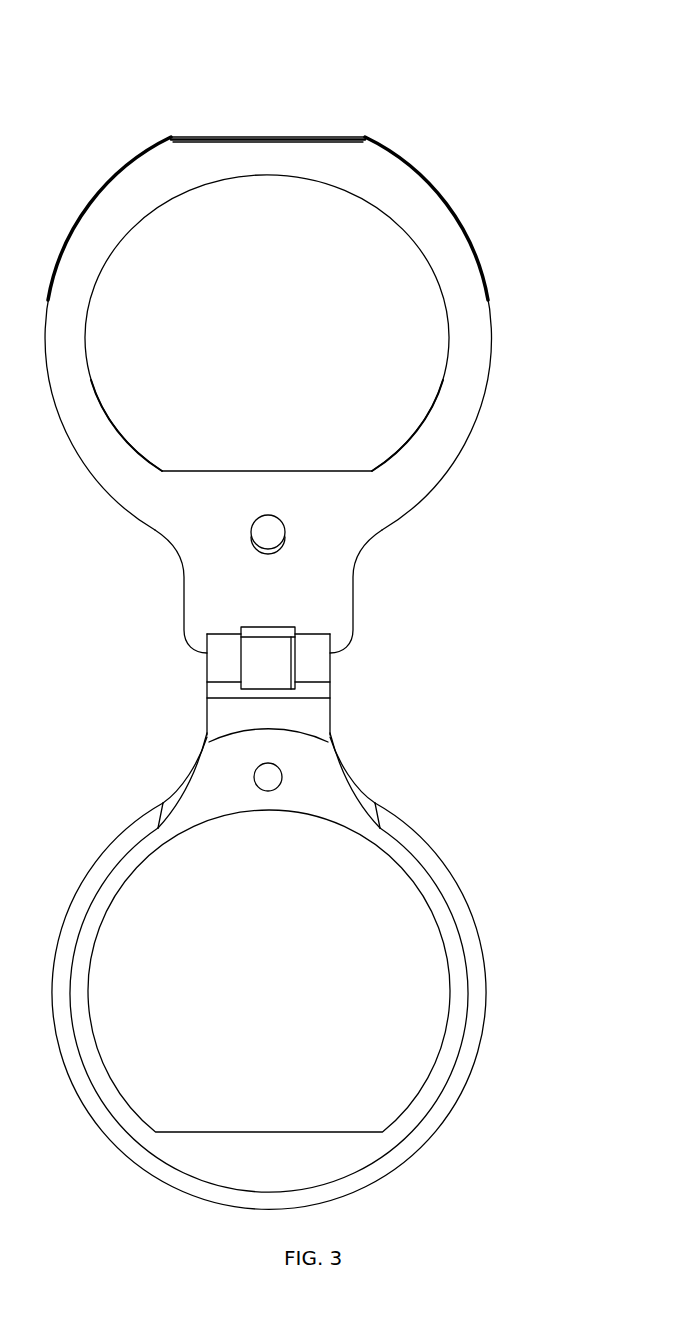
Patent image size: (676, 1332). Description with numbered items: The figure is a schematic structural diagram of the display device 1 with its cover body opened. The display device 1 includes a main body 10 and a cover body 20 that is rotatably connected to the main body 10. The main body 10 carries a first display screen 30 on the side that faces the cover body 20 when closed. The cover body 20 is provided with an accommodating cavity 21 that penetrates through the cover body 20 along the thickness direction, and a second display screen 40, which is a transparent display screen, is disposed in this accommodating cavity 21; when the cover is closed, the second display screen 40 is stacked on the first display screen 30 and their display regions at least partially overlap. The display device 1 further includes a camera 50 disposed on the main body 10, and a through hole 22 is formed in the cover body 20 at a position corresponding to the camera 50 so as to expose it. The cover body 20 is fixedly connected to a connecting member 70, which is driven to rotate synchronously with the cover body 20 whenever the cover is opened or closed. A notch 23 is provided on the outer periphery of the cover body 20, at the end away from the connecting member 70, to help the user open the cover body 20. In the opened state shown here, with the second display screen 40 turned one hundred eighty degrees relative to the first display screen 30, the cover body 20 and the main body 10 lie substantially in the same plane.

The display device 1 is at (433, 114).
The main body 10 is at (340, 793).
The cover body 20 is at (342, 613).
The accommodating cavity 21 is at (423, 252).
The through hole 22 is at (285, 532).
The notch 23 is at (275, 137).
The first display screen 30 is at (213, 893).
The second display screen 40 is at (428, 342).
The camera 50 is at (270, 780).
The connecting member 70 is at (270, 670).